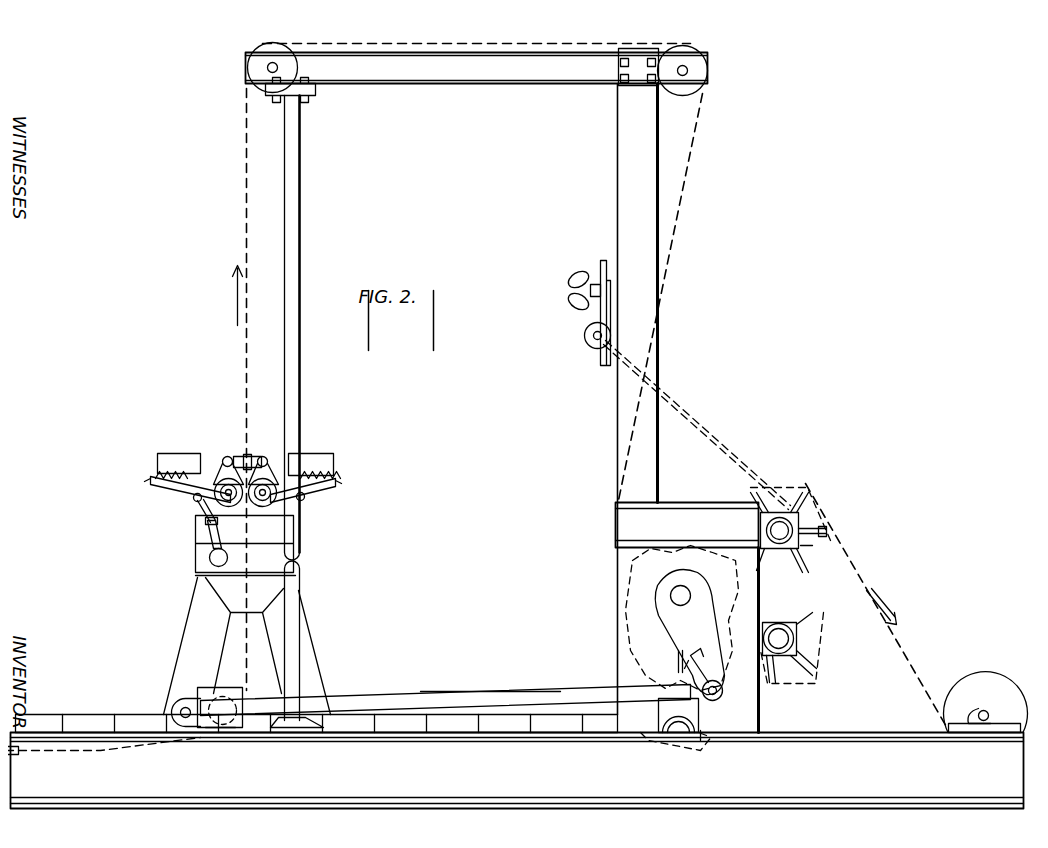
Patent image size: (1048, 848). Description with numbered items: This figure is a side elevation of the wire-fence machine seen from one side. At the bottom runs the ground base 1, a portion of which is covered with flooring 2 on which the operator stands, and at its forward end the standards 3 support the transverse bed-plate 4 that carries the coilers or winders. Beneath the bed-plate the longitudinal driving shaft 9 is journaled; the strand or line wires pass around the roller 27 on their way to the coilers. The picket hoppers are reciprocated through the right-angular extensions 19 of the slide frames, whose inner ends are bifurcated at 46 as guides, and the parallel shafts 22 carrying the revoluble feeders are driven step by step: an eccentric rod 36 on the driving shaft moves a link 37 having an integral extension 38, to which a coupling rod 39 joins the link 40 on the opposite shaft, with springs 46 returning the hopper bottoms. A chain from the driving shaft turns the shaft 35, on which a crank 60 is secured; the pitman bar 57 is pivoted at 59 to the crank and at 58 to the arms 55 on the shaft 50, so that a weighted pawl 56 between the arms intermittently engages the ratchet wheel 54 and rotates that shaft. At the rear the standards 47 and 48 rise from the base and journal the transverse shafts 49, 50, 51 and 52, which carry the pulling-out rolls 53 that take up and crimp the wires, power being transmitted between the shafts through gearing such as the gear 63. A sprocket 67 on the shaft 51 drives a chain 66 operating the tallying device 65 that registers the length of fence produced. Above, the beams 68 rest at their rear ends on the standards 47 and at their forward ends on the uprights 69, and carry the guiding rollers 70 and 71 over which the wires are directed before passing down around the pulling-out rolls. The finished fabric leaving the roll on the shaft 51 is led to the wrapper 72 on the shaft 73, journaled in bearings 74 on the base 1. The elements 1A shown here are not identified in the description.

The ground base 1 is at (516, 762).
The guide box 1A is at (168, 452).
The flooring 2 is at (403, 722).
The standards 3 is at (182, 625).
The bed-plate 4 is at (270, 534).
The longitudinal shaft 9 is at (212, 557).
The right-angular extensions 19 is at (160, 480).
The shafts 22 is at (229, 497).
The roller 27 is at (213, 723).
The shaft 35 is at (227, 727).
The rod 36 is at (205, 522).
The link 37 is at (207, 500).
The integral extension 38 is at (222, 456).
The coupling rod 39 is at (250, 452).
The link 40 is at (157, 470).
The springs 46 is at (335, 480).
The standards 47 is at (628, 245).
The standards 48 is at (740, 727).
The transverse shaft 49 is at (680, 708).
The transverse shaft 50 is at (670, 596).
The transverse shaft 51 is at (785, 528).
The transverse shaft 52 is at (800, 628).
The pulling-out rolls 53 is at (810, 677).
The ratchet wheel 54 is at (682, 618).
The arms 55 is at (689, 631).
The weighted pawl 56 is at (718, 680).
The pitman bar 57 is at (492, 698).
The pivot 58 is at (712, 694).
The pivot 59 is at (180, 710).
The crank 60 is at (212, 687).
The gear 63 is at (752, 490).
The tallying device 65 is at (580, 318).
The chain 66 is at (703, 413).
The sprocket 67 is at (805, 546).
The beams 68 is at (541, 83).
The uprights 69 is at (288, 292).
The guiding roller 70 is at (268, 50).
The guiding roller 71 is at (700, 53).
The wrapper 72 is at (972, 686).
The shaft 73 is at (981, 719).
The bearings 74 is at (945, 725).